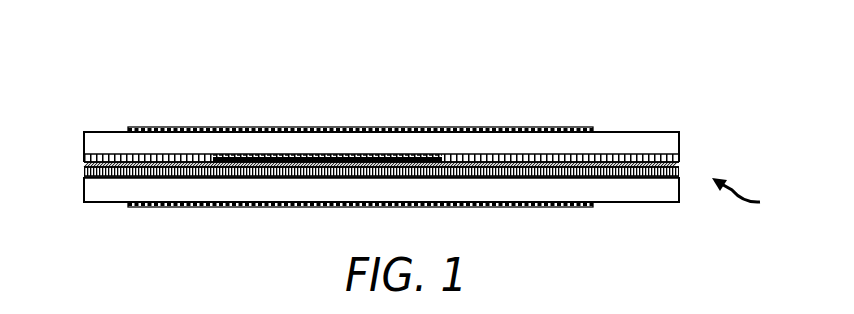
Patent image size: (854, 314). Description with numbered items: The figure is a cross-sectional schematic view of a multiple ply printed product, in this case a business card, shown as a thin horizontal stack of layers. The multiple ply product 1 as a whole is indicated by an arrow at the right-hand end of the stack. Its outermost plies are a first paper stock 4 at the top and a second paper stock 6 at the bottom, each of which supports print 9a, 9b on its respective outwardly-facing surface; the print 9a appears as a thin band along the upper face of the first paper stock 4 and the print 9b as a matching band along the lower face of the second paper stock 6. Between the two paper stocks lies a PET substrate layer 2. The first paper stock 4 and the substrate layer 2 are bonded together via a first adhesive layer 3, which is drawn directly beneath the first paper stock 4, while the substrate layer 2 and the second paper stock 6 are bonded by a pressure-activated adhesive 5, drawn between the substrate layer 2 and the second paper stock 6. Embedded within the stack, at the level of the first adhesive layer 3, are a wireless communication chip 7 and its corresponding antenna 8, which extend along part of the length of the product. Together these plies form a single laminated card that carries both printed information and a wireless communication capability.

The multiple ply product 1 is at (745, 199).
The PET substrate layer 2 is at (86, 168).
The first adhesive layer 3 is at (86, 158).
The first paper stock 4 is at (87, 142).
The pressure-activated adhesive 5 is at (94, 178).
The second paper stock 6 is at (97, 197).
The wireless communication chip 7 is at (220, 157).
The antenna 8 is at (281, 157).
The print 9a is at (145, 128).
The print 9b is at (150, 206).